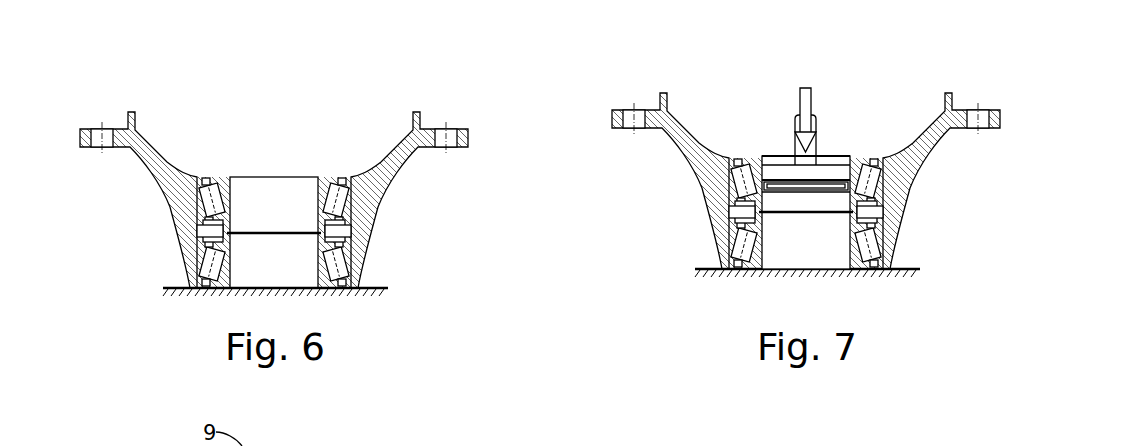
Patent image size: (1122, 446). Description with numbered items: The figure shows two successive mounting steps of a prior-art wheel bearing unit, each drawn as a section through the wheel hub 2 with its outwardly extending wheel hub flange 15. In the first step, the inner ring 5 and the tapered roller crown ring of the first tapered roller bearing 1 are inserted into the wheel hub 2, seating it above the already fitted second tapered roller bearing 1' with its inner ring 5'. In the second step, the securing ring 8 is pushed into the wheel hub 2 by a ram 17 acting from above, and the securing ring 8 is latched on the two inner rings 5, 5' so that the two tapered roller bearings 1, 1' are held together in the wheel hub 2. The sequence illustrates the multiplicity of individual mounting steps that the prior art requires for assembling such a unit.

In FIG. 6, the tapered roller bearing 1 is at (274, 205).
In FIG. 7, the tapered roller bearing 1 is at (782, 142).
In FIG. 6, the tapered roller bearing 1' is at (274, 260).
In FIG. 7, the tapered roller bearing 1' is at (806, 240).
In FIG. 6, the wheel hub 2 is at (177, 227).
In FIG. 7, the wheel hub 2 is at (806, 181).
In FIG. 6, the inner ring 5 is at (271, 163).
In FIG. 6, the inner ring 5' is at (274, 194).
In FIG. 7, the securing ring 8 is at (828, 185).
In FIG. 6, the wheel hub flange 15 is at (468, 137).
In FIG. 7, the wheel hub flange 15 is at (856, 101).
In FIG. 7, the ram 17 is at (814, 123).